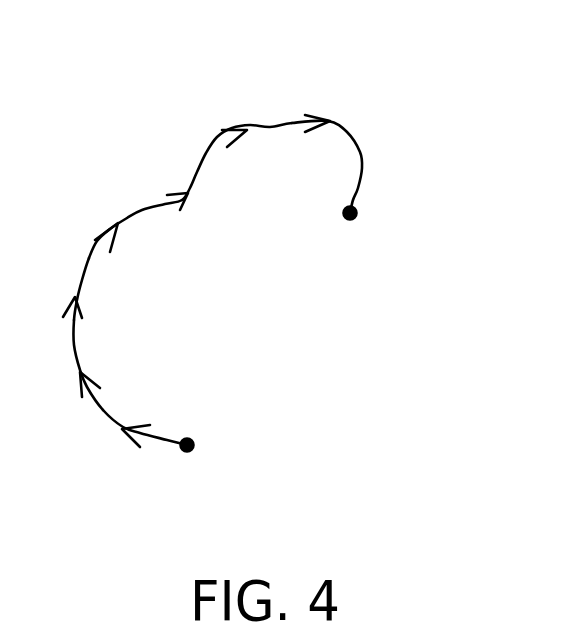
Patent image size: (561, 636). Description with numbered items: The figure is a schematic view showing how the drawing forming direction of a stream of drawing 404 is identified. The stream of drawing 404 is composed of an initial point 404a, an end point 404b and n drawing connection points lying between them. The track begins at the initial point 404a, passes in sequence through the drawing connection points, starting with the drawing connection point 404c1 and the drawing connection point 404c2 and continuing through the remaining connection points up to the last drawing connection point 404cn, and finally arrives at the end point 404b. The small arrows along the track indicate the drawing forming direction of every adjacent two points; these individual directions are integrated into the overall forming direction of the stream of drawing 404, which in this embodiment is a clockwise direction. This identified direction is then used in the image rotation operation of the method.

The stream of drawing 404 is at (302, 112).
The initial point 404a is at (177, 453).
The end point 404b is at (365, 213).
The drawing connection point 404c1 is at (156, 421).
The drawing connection point 404c2 is at (120, 365).
The drawing connection point 404cn is at (346, 147).